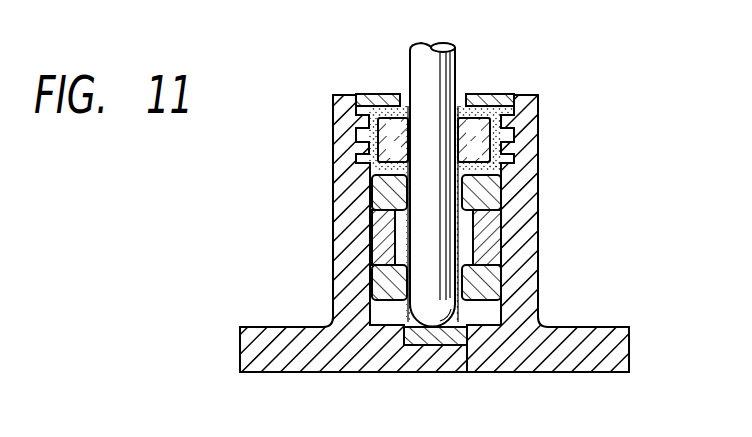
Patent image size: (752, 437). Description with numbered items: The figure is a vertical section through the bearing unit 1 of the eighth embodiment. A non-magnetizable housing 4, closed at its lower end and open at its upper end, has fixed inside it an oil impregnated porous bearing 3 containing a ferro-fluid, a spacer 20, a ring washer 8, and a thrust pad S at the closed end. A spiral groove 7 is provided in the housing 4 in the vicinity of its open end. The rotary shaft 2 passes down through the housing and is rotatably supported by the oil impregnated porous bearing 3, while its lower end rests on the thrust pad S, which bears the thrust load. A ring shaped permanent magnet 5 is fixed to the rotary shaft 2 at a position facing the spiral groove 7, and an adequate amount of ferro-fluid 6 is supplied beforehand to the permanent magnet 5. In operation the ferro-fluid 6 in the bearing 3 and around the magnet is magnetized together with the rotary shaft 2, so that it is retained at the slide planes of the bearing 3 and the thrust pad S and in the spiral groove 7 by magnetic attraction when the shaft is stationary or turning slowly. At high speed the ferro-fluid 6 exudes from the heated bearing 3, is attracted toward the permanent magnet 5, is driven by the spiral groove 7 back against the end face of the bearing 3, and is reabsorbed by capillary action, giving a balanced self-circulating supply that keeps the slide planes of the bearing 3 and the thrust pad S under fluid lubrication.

The bearing unit 1 is at (540, 131).
The rotary shaft 2 is at (456, 60).
The oil impregnated porous bearing 3 is at (497, 199).
The housing 4 is at (333, 224).
The permanent magnet 5 is at (383, 104).
The ferro-fluid 6 is at (516, 158).
The spiral groove 7 is at (366, 147).
The ring washer 8 is at (498, 98).
The spacer 20 is at (375, 251).
The thrust pad S is at (467, 372).